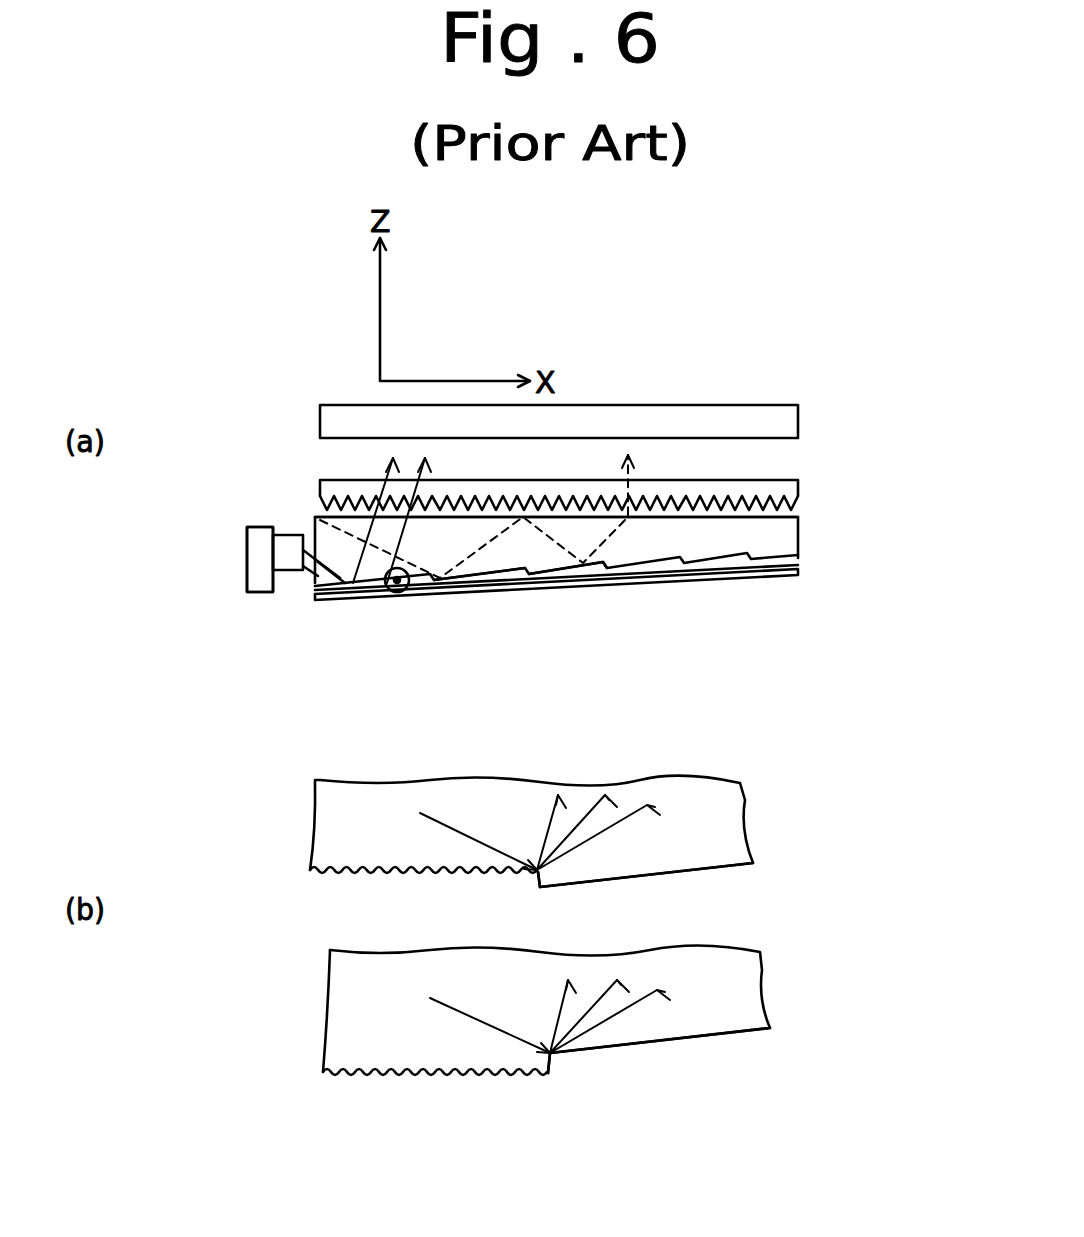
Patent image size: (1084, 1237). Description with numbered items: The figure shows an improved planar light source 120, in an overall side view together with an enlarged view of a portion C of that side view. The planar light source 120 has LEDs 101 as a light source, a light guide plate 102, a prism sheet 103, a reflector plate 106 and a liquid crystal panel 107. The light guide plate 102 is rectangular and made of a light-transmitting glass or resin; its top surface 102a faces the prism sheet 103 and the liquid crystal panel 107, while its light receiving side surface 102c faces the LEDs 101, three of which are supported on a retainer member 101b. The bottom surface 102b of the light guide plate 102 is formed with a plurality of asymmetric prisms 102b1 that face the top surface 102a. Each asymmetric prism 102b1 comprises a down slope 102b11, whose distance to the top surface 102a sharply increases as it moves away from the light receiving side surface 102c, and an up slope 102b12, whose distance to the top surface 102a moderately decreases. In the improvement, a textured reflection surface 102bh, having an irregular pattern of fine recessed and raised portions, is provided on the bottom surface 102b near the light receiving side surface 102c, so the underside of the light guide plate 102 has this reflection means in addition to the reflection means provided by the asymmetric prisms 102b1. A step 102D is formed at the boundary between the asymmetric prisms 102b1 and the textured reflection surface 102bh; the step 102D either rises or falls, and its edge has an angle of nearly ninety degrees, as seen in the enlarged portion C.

The liquid crystal panel 107 is at (750, 405).
The improved planar light source 120 is at (313, 466).
The prism sheet 103 is at (798, 486).
The light guide plate 102 is at (790, 541).
The top surface 102a is at (778, 517).
The bottom surface 102b is at (802, 638).
The asymmetric prisms 102b1 is at (625, 632).
The down slope 102b11 is at (478, 590).
The up slope 102b12 is at (466, 592).
The reflector plate 106 is at (775, 578).
The LEDs 101 is at (295, 527).
The retainer member 101b is at (247, 566).
The light receiving side surface 102c is at (307, 577).
The textured reflection surface 102bh is at (386, 590).
The step 102D is at (417, 595).
The portion C is at (430, 590).